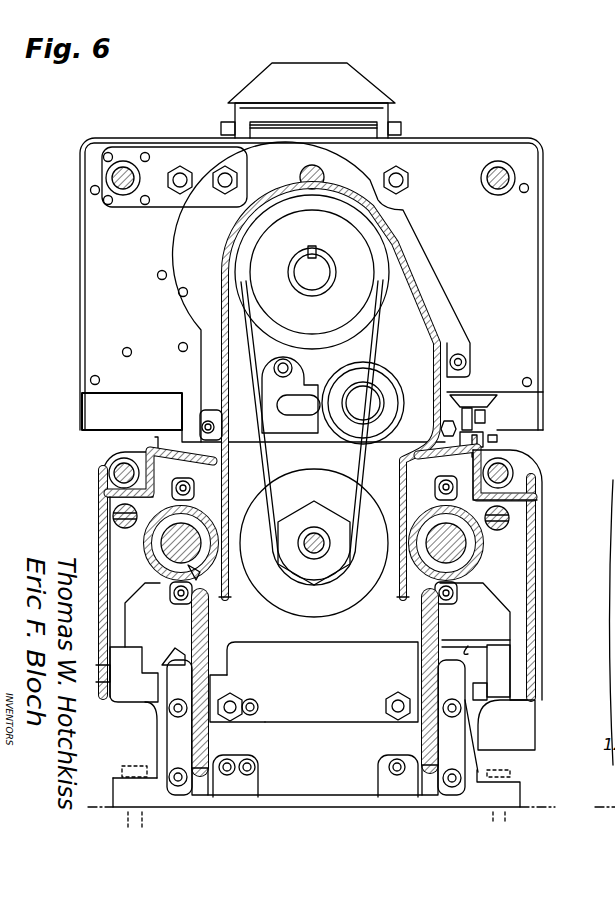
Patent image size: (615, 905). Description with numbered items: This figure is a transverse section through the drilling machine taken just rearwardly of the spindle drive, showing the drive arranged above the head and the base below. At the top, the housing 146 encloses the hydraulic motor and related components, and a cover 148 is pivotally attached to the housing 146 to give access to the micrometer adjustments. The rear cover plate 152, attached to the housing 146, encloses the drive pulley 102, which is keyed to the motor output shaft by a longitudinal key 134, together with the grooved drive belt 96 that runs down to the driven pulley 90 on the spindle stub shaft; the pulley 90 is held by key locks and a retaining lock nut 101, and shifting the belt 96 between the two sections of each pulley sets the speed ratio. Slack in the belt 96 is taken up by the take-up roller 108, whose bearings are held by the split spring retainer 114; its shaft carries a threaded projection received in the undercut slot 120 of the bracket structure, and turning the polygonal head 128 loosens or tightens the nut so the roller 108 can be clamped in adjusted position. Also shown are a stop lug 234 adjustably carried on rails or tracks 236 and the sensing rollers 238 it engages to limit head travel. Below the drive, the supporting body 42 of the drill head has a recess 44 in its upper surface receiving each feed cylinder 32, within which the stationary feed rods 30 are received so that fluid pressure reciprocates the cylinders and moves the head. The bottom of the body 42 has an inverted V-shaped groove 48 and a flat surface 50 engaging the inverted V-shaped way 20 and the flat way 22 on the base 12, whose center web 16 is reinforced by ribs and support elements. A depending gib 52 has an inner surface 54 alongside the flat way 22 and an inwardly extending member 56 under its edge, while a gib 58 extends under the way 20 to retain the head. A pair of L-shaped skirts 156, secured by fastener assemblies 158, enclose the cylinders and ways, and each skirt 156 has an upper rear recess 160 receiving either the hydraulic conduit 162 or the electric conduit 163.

The cover 148 is at (360, 90).
The housing 146 is at (468, 142).
The electric conduit 163 is at (122, 167).
The conduit 162 is at (512, 177).
The longitudinal key 134 is at (309, 255).
The drive pulley 102 is at (360, 260).
The rear cover plate 152 is at (418, 290).
The drive belt 96 is at (240, 324).
The slack take-up roller 108 is at (368, 373).
The retainer 114 is at (373, 388).
The polygonal head 128 is at (368, 410).
The undercut slot 120 is at (458, 390).
The sensing rollers 238 is at (478, 408).
The stop lug 234 is at (482, 422).
The rails or tracks 236 is at (480, 437).
The retaining lock nut 101 is at (307, 515).
The pulley 90 is at (285, 593).
The L-shaped skirts 156 is at (100, 517).
The recess 160 is at (520, 488).
The feed rods 30 is at (176, 538).
The feed cylinders 32 is at (195, 570).
The recess 44 is at (430, 568).
The supporting body 42 is at (505, 628).
The inverted V-shaped groove 48 is at (178, 655).
The flat surface 50 is at (468, 646).
The flat way 22 is at (475, 657).
The gib 52 is at (498, 672).
The inner surface 54 is at (480, 673).
The inwardly extending member 56 is at (493, 698).
The gib 58 is at (133, 690).
The inverted V-shaped way 20 is at (160, 672).
The center web 16 is at (303, 733).
The base structure 12 is at (507, 793).
The fastener elements or assemblies 158 is at (608, 690).